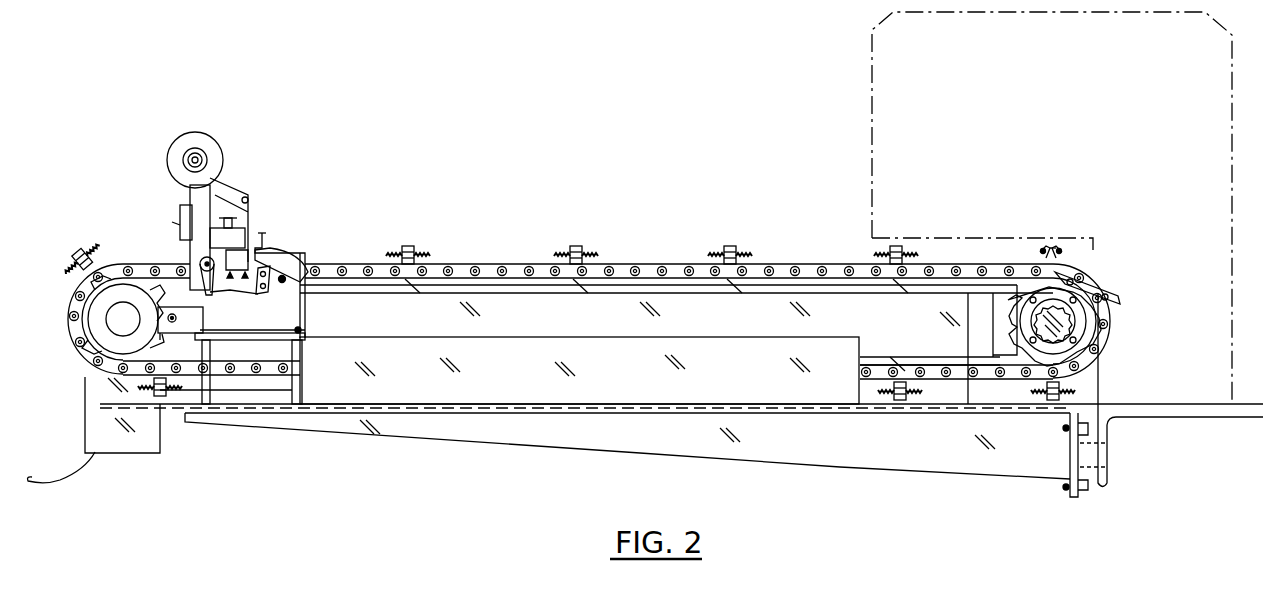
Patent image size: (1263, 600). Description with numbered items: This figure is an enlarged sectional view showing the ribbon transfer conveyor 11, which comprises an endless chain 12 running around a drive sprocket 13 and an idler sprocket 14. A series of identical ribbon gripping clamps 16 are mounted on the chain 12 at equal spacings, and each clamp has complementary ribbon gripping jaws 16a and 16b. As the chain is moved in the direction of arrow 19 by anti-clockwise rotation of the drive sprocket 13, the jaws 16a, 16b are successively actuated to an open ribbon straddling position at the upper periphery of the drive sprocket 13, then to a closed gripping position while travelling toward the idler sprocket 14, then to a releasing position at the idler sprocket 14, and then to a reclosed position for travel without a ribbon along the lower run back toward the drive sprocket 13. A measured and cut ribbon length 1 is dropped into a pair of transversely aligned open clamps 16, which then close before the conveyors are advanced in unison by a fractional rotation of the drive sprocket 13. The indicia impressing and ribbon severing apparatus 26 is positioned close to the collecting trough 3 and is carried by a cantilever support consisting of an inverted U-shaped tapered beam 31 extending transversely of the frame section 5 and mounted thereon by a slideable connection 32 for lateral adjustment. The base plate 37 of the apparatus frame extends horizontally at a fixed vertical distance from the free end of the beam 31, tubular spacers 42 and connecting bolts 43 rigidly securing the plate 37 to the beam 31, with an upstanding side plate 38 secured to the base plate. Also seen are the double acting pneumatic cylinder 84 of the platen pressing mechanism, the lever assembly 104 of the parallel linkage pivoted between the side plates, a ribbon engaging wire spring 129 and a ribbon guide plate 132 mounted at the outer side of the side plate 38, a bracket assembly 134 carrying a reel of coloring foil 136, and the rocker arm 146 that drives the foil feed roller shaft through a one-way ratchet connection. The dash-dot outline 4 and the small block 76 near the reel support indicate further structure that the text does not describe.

The ribbon length 1 is at (1051, 246).
The collecting trough 3 is at (58, 468).
The housing 4 is at (862, 117).
The frame section 5 is at (1153, 418).
The ribbon transfer conveyor 11 is at (638, 266).
The endless chain 12 is at (470, 264).
The drive sprocket 13 is at (1010, 309).
The idler sprocket 14 is at (92, 314).
The ribbon gripping clamp 16 is at (414, 247).
The ribbon gripping jaw 16a is at (1064, 251).
The ribbon gripping jaw 16b is at (1040, 251).
The arrow 19 is at (853, 224).
The indicia impressing and ribbon severing apparatus 26 is at (291, 214).
The cantilever beam 31 is at (859, 470).
The slideable connection 32 is at (1068, 459).
The base plate 37 is at (303, 339).
The side plate 38 is at (256, 333).
The tubular spacer 42 is at (290, 386).
The connecting bolt 43 is at (300, 329).
The slide block 76 is at (243, 238).
The double acting pneumatic cylinder 84 is at (200, 331).
The lever assembly 104 is at (298, 286).
The ribbon engaging wire spring 129 is at (266, 250).
The ribbon guide plate 132 is at (300, 260).
The bracket assembly 134 is at (171, 148).
The reel of coloring foil 136 is at (247, 212).
The rocker arm 146 is at (182, 264).